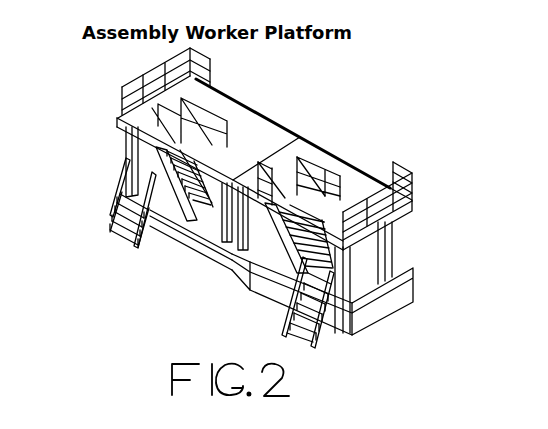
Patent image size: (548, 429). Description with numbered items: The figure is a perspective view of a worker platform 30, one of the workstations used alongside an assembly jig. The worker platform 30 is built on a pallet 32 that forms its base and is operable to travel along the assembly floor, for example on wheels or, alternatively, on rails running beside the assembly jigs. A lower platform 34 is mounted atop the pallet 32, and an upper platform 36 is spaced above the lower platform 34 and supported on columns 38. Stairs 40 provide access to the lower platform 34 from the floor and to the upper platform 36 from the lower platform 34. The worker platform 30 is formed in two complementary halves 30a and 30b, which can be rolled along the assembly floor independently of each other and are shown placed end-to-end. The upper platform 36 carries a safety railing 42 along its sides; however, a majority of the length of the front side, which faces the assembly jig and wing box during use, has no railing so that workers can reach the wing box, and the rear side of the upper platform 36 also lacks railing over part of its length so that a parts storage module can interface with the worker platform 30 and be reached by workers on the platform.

The worker platform 30 is at (366, 104).
The complementary half 30a is at (250, 97).
The complementary half 30b is at (354, 158).
The pallet 32 is at (372, 315).
The lower platform 34 is at (208, 220).
The upper platform 36 is at (261, 130).
The columns 38 is at (124, 140).
The stairs 40 is at (108, 222).
The safety railing 42 is at (148, 72).